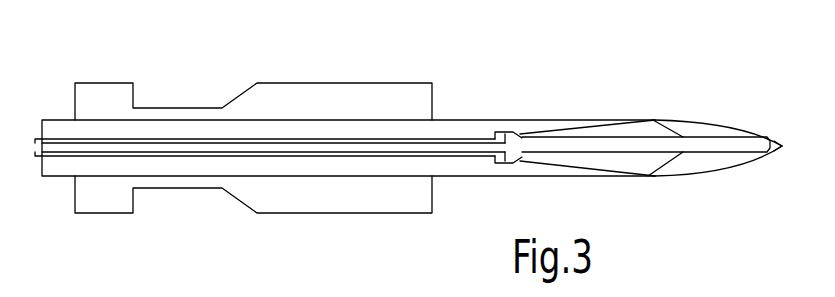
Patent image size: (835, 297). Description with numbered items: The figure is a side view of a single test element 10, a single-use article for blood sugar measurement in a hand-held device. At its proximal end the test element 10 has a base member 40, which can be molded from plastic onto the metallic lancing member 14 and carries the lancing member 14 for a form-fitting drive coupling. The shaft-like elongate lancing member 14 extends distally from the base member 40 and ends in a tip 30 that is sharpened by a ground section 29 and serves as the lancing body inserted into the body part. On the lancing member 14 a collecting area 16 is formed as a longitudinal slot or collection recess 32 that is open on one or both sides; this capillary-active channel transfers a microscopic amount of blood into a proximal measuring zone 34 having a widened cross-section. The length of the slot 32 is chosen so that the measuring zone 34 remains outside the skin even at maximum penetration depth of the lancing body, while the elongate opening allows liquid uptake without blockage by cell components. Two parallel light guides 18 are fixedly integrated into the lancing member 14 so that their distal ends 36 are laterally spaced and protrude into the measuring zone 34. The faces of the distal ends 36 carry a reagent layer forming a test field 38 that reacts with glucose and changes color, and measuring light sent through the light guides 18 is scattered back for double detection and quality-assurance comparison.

The test element 10 is at (452, 113).
The lancing member 14 is at (535, 118).
The collecting area 16 is at (648, 148).
The light guide 18 is at (335, 138).
The ground section 29 is at (737, 135).
The tip 30 is at (782, 148).
The collection recess 32 is at (692, 145).
The measuring zone 34 is at (509, 156).
The distal ends of the light guides 36 is at (495, 160).
The test field 38 is at (510, 131).
The base member 40 is at (267, 93).